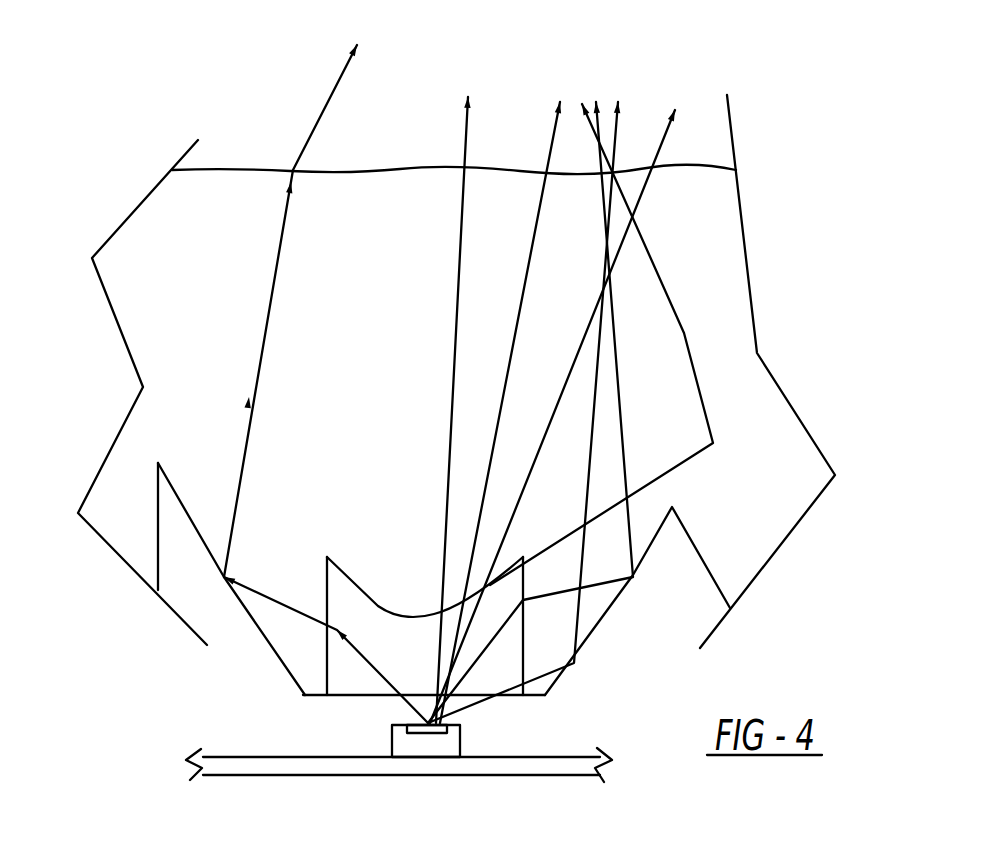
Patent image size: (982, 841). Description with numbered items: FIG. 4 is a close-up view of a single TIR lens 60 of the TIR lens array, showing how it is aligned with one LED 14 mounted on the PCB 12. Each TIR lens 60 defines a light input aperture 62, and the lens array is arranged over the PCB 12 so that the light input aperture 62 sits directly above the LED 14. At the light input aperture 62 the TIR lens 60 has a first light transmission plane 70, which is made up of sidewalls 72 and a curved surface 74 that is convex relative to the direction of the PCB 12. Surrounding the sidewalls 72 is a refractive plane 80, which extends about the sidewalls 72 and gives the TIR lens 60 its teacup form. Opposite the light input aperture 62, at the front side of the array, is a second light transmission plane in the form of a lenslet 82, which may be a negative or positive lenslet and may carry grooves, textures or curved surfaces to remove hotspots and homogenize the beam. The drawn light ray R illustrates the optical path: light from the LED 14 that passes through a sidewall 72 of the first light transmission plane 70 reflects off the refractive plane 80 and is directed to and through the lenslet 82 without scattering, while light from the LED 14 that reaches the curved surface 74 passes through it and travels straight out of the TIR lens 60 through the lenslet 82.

The TIR lens 60 is at (112, 118).
The lenslet 82 is at (706, 167).
The refractive plane 80 is at (181, 492).
The light ray R is at (325, 107).
The curved surface 74 is at (386, 600).
The sidewalls 72 is at (328, 646).
The first light transmission plane 70 is at (328, 672).
The light input aperture 62 is at (508, 695).
The LED 14 is at (403, 742).
The PCB 12 is at (577, 768).